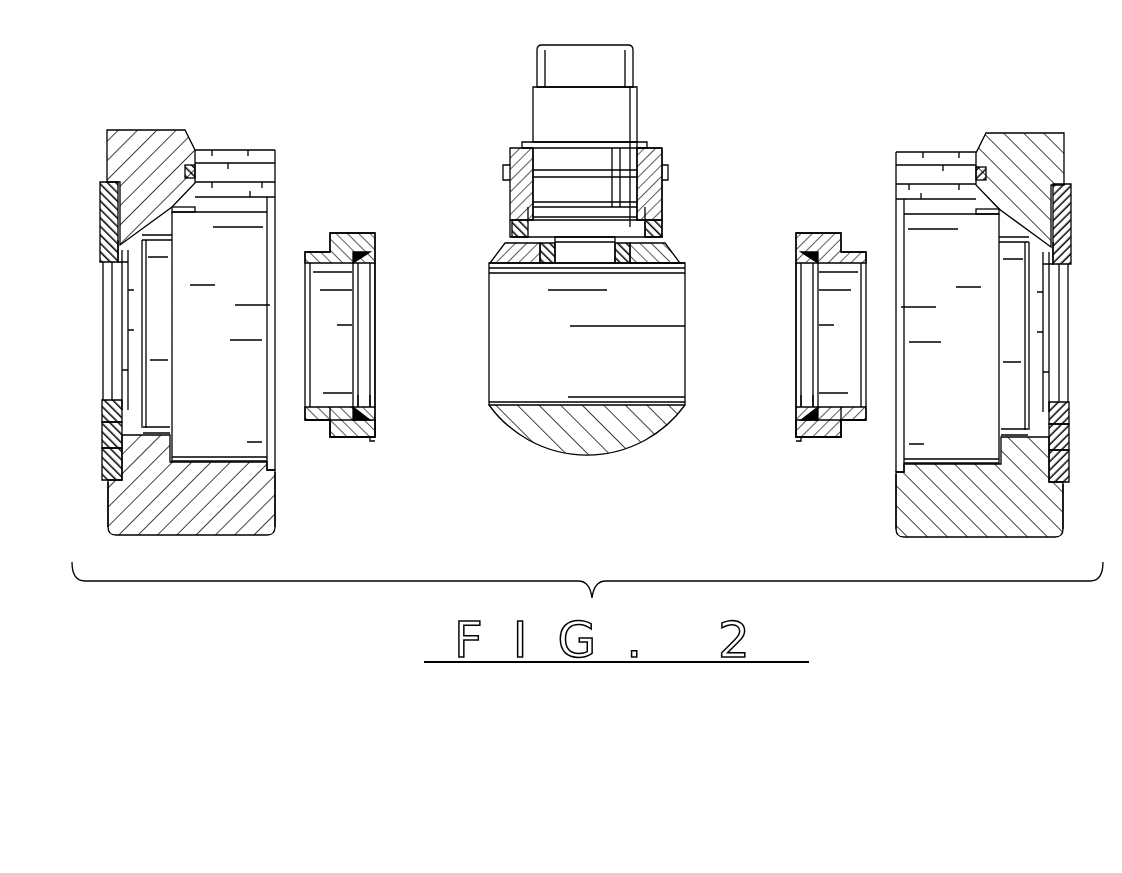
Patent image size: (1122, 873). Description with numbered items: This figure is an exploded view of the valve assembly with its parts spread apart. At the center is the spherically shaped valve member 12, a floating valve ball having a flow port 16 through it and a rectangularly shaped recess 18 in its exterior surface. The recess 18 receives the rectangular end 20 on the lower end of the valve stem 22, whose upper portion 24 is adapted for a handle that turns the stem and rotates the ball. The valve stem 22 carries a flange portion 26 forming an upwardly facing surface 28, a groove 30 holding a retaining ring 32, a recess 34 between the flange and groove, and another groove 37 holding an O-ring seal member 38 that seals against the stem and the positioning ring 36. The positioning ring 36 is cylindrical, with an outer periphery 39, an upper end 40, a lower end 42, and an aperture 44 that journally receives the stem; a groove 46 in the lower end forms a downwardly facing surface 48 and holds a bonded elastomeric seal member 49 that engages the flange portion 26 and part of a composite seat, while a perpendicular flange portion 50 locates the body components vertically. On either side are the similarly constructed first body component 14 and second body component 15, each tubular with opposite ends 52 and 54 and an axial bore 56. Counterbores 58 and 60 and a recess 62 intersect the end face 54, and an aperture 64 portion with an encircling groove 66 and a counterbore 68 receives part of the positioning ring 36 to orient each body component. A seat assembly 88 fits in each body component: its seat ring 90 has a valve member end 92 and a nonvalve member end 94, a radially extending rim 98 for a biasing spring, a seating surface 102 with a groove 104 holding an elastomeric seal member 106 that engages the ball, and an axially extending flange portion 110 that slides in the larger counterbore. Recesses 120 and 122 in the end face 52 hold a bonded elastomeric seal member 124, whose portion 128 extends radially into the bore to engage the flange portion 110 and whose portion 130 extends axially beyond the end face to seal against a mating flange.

The valve member 12 is at (553, 420).
The first body component 14 is at (204, 528).
The second body component 15 is at (983, 533).
The flow port 16 is at (633, 407).
The recess 18 is at (553, 264).
The rectangular end 20 is at (590, 258).
The valve stem 22 is at (623, 100).
The upper portion 24 is at (575, 53).
The flange portion 26 is at (565, 237).
The upwardly facing surface 28 is at (568, 230).
The groove 30 is at (605, 149).
The retaining ring 32 is at (573, 142).
The recess 34 is at (597, 183).
The positioning ring 36 is at (511, 141).
The groove 37 is at (638, 205).
The O-ring seal member 38 is at (655, 264).
The outer periphery 39 is at (663, 154).
The upper end 40 is at (657, 148).
The lower end 42 is at (662, 232).
The aperture 44 is at (510, 188).
The groove 46 is at (662, 251).
The downwardly facing surface 48 is at (500, 253).
The elastomeric seal member 49 is at (512, 232).
The flange portion 50 is at (503, 168).
The end 52 is at (106, 507).
The end 54 is at (276, 514).
The bore 56 is at (123, 420).
The counterbore 58 is at (193, 460).
The counterbore 60 is at (172, 415).
The recess 62 is at (276, 468).
The aperture 64 is at (196, 150).
The groove 66 is at (195, 175).
The counterbore 68 is at (195, 217).
The seat assembly 88 is at (342, 403).
The seat ring 90 is at (332, 440).
The valve member end 92 is at (372, 436).
The nonvalve member end 94 is at (330, 425).
The rim 98 is at (375, 441).
The seating surface 102 is at (360, 417).
The groove 104 is at (355, 276).
The elastomeric seal member 106 is at (357, 407).
The flange portion 110 is at (320, 400).
The recess 120 is at (122, 195).
The recess 122 is at (121, 243).
The elastomeric seal member 124 is at (112, 443).
The portion 128 is at (120, 416).
The portion 130 is at (110, 471).